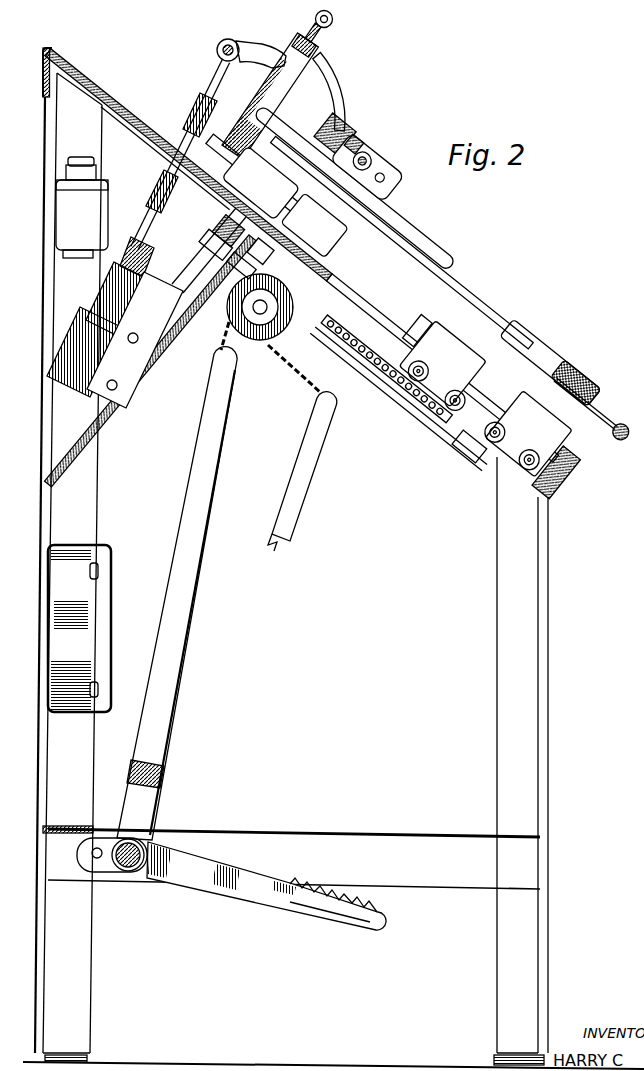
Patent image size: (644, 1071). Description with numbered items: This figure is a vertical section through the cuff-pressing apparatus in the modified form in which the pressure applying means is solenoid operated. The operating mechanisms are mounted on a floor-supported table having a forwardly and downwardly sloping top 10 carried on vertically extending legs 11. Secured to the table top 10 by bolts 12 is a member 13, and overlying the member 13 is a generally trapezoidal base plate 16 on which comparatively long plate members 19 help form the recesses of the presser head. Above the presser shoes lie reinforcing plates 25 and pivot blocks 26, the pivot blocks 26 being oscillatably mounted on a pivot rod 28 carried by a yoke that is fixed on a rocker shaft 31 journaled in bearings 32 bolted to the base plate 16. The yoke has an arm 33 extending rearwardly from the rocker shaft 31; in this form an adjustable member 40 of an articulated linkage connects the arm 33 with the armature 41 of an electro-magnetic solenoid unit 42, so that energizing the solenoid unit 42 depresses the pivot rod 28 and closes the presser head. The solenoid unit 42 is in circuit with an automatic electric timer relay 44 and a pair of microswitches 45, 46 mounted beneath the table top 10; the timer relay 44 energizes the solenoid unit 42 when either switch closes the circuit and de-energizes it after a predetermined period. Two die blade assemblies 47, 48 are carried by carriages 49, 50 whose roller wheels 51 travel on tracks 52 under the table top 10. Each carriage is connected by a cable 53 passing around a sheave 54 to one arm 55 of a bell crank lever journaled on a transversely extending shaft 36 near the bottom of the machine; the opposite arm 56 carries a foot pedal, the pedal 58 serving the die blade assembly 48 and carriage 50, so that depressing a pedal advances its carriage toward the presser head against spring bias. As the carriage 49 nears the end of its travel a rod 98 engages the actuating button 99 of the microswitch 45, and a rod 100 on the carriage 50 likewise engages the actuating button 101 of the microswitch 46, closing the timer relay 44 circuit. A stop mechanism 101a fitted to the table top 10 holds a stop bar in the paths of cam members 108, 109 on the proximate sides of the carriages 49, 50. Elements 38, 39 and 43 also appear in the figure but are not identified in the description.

The table top 10 is at (118, 92).
The legs 11 is at (83, 752).
The bolts 12 is at (261, 183).
The member 13 is at (353, 263).
The base plate 16 is at (200, 128).
The comparatively long plate members 19 is at (270, 96).
The reinforcing plates 25 is at (340, 118).
The pivot blocks 26 is at (392, 186).
The pivot rod 28 is at (395, 172).
The rocker shaft 31 is at (375, 160).
The bearings 32 is at (366, 142).
The arm 33 is at (266, 43).
The shaft 36 is at (128, 872).
The arcuate guide 38 is at (320, 80).
The guide bar 39 is at (423, 237).
The adjustable member 40 is at (214, 62).
The armature 41 is at (117, 262).
The electro-magnetic solenoid unit 42 is at (83, 347).
The guide rail 43 is at (107, 427).
The automatic electric timer relay 44 is at (62, 228).
The microswitch 45 is at (222, 225).
The microswitch 46 is at (208, 246).
The die blade assembly 47 is at (470, 312).
The die blade assembly 48 is at (572, 363).
The carriage 49 is at (435, 383).
The carriage 50 is at (502, 473).
The roller wheels 51 is at (462, 407).
The tracks 52 is at (288, 333).
The cable 53 is at (227, 340).
The sheave 54 is at (283, 338).
The arm 55 is at (300, 500).
The arm 56 is at (247, 892).
The foot pedal 58 is at (380, 908).
The rod 98 is at (379, 360).
The actuating button 99 is at (265, 252).
The rod 100 is at (469, 447).
The actuating button 101 is at (241, 265).
The stop mechanism 101a is at (515, 323).
The cam member 108 is at (426, 329).
The cam member 109 is at (553, 418).